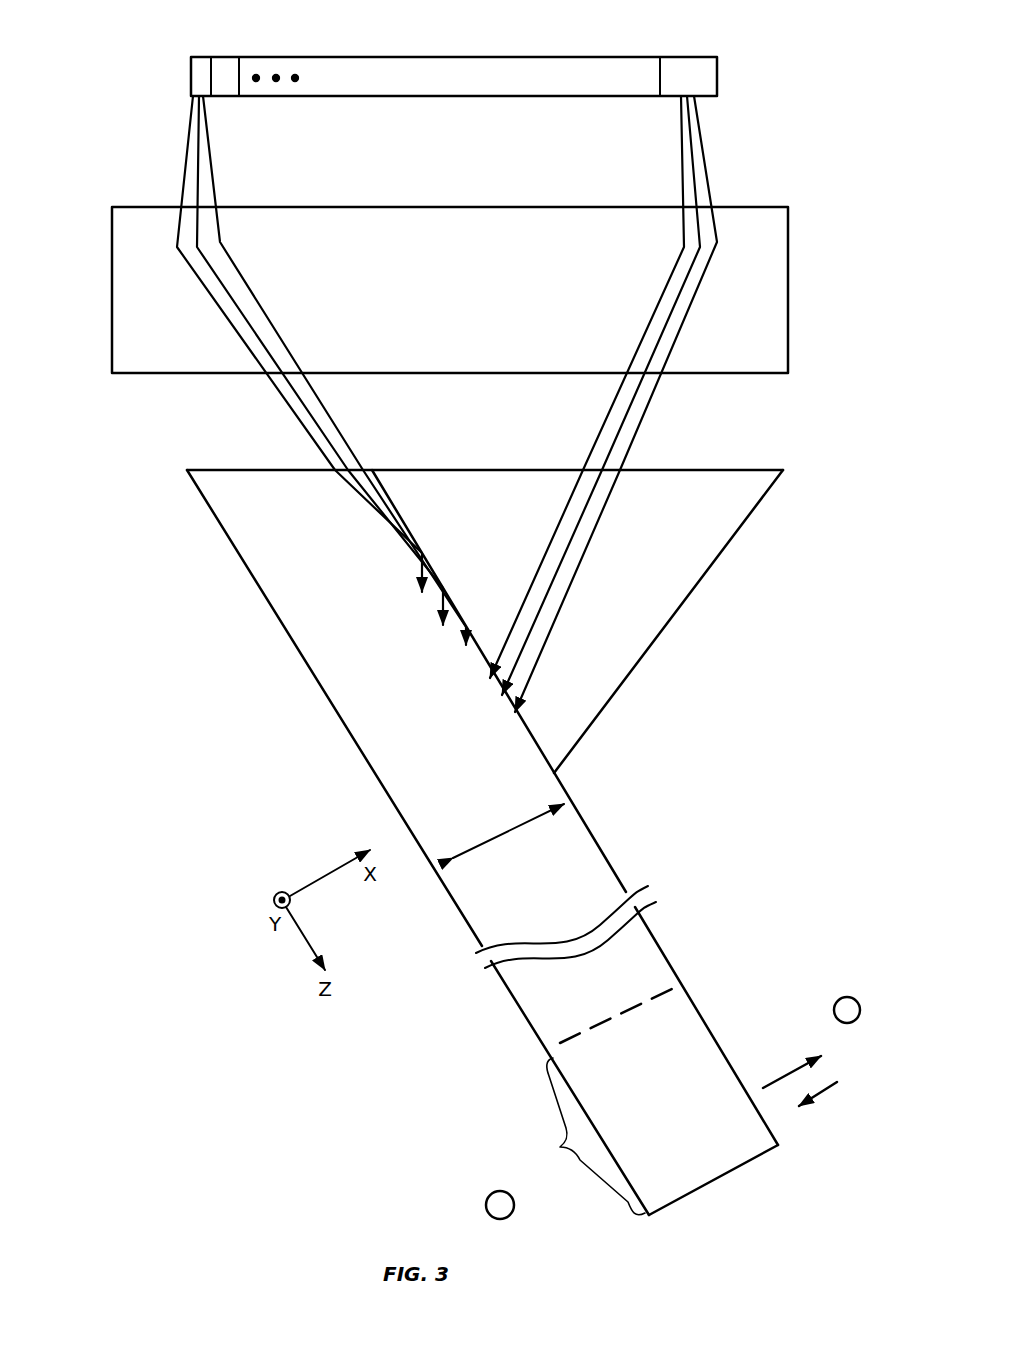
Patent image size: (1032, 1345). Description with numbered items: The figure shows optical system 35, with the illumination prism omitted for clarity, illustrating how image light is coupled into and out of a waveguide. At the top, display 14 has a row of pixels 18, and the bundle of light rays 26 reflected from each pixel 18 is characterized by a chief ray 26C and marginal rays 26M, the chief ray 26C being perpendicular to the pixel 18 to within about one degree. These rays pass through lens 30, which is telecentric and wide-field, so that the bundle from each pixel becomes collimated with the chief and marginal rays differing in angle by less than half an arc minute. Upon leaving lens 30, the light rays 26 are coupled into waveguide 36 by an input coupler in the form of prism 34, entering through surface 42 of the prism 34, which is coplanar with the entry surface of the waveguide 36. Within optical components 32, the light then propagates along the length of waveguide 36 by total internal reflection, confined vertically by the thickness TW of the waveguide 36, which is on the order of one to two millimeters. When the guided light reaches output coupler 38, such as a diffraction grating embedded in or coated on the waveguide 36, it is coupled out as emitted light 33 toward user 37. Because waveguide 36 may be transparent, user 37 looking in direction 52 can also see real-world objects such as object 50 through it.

The display 14 is at (513, 50).
The pixel 18 is at (193, 57).
The light rays 26 is at (414, 404).
The marginal rays 26M is at (187, 143).
The chief ray 26C is at (200, 115).
The lens 30 is at (790, 305).
The surface of prism 42 is at (485, 589).
The prism 34 is at (676, 613).
The optical system 35 is at (836, 539).
The optical components 32 is at (461, 842).
The waveguide 36 is at (263, 592).
The output coupler 38 is at (593, 1136).
The emitted light 33 is at (790, 1072).
The direction 52 is at (835, 1090).
The user 37 is at (847, 997).
The object 50 is at (486, 1200).
The thickness of waveguide TW is at (508, 837).